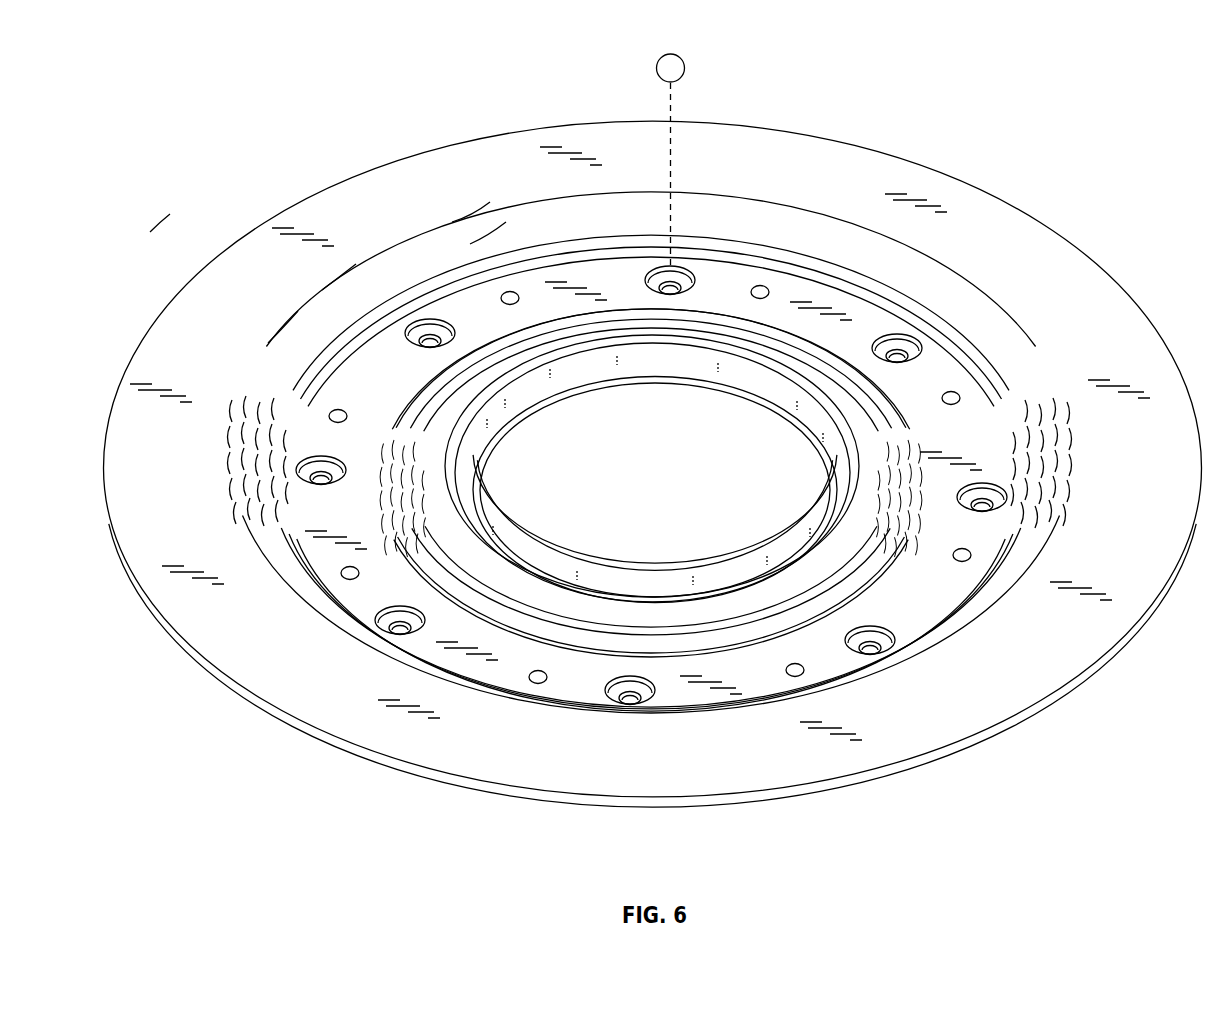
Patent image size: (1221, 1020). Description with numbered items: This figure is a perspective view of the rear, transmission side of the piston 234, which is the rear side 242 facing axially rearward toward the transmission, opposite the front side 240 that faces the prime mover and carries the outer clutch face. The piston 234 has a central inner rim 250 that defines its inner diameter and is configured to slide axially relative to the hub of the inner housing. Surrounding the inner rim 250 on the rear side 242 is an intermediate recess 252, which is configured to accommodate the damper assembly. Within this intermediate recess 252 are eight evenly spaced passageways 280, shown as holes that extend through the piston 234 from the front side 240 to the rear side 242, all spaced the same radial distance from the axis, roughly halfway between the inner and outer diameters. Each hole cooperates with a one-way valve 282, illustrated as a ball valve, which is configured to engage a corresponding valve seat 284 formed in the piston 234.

The piston 234 is at (305, 260).
The front side 240 is at (1028, 718).
The rear side 242 is at (980, 213).
The inner rim 250 is at (543, 383).
The intermediate recess 252 is at (957, 423).
The passageways 280 is at (592, 697).
The one-way valves 282 is at (668, 52).
The valve seats 284 is at (687, 273).